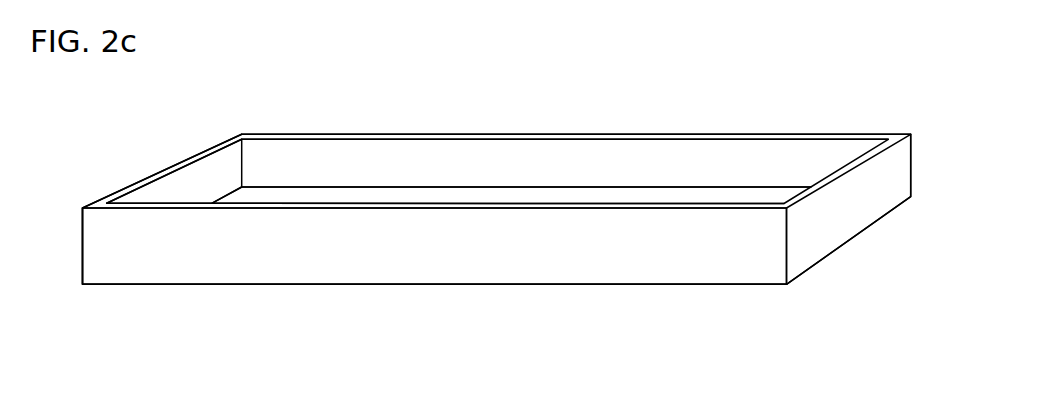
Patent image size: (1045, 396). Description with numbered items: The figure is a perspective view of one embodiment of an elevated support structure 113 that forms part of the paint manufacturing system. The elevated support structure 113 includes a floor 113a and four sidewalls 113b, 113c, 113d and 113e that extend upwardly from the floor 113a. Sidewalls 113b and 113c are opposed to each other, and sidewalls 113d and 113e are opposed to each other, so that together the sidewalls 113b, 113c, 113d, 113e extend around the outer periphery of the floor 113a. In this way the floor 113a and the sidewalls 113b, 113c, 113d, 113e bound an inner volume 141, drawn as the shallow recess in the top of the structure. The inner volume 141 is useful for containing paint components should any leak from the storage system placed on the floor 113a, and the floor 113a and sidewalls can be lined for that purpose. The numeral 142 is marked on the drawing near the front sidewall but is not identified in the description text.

The elevated support structure 113 is at (225, 119).
The floor 113a is at (383, 196).
The sidewall 113b is at (153, 173).
The sidewall 113c is at (853, 200).
The sidewall 113d is at (172, 272).
The sidewall 113e is at (511, 150).
The inner volume 141 is at (620, 160).
The outer surface of front wall 142 is at (705, 265).